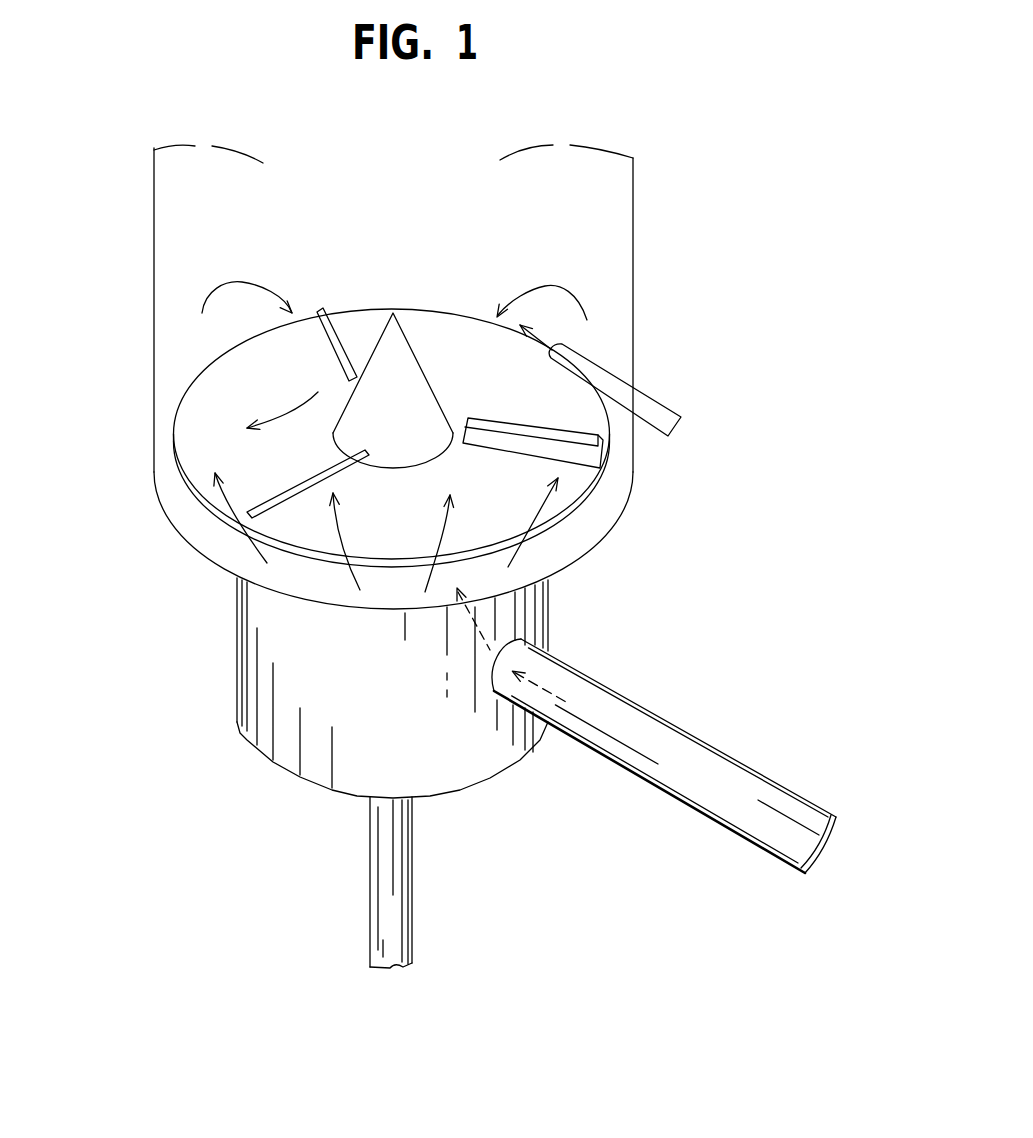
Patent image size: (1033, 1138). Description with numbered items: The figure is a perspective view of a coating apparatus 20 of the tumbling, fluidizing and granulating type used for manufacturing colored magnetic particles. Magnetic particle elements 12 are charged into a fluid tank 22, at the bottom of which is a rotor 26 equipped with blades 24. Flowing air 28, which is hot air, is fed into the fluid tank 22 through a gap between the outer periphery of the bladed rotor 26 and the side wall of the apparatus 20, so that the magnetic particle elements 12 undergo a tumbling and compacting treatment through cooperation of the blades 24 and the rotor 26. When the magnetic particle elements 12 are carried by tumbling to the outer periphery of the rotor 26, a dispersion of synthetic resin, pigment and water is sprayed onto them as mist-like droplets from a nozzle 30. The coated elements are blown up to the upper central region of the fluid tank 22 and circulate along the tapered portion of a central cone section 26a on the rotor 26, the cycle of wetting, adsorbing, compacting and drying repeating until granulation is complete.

The coating apparatus 20 is at (640, 206).
The fluid tank 22 is at (633, 256).
The blades 24 is at (340, 308).
The rotor 26 is at (573, 419).
The central cone section 26a is at (410, 318).
The flowing air 28 is at (527, 548).
The nozzle 30 is at (600, 377).
The magnetic particle elements 12 is at (467, 373).